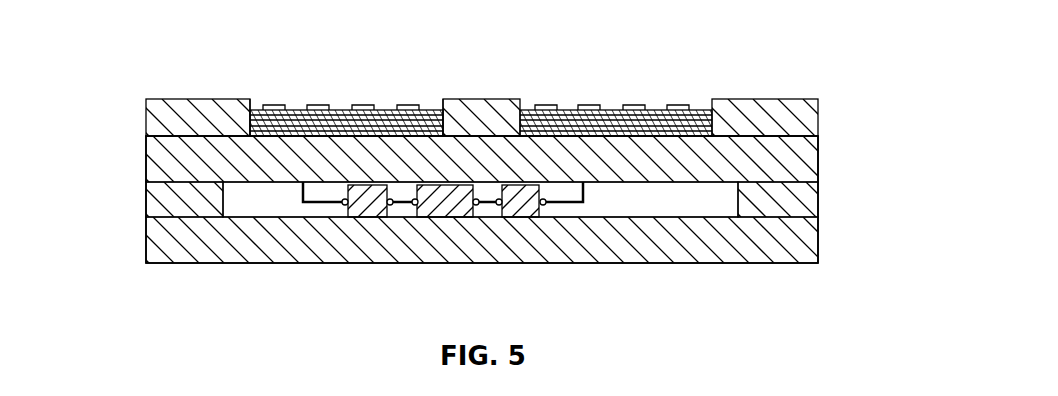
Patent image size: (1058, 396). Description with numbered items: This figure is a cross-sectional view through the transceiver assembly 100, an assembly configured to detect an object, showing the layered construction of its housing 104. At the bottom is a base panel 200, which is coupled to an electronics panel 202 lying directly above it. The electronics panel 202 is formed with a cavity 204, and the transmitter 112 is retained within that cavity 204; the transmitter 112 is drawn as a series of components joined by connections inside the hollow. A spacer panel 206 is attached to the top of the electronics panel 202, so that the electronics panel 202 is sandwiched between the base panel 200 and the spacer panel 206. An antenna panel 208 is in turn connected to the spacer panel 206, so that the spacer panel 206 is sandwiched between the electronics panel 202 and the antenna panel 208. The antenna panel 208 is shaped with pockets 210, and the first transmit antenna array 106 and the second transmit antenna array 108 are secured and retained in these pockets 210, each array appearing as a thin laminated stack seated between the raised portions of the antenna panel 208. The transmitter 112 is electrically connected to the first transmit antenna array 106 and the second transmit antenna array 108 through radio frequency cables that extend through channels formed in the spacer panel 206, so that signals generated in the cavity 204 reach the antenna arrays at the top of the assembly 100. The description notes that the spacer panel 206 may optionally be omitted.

The transceiver assembly 100 is at (145, 52).
The housing 104 is at (145, 159).
The first transmit antenna array 106 is at (655, 108).
The second transmit antenna array 108 is at (340, 108).
The transmitter 112 is at (366, 198).
The base panel 200 is at (145, 241).
The electronics panel 202 is at (818, 199).
The cavity 204 is at (645, 200).
The spacer panel 206 is at (818, 160).
The antenna panel 208 is at (818, 119).
The pockets 210 is at (250, 108).